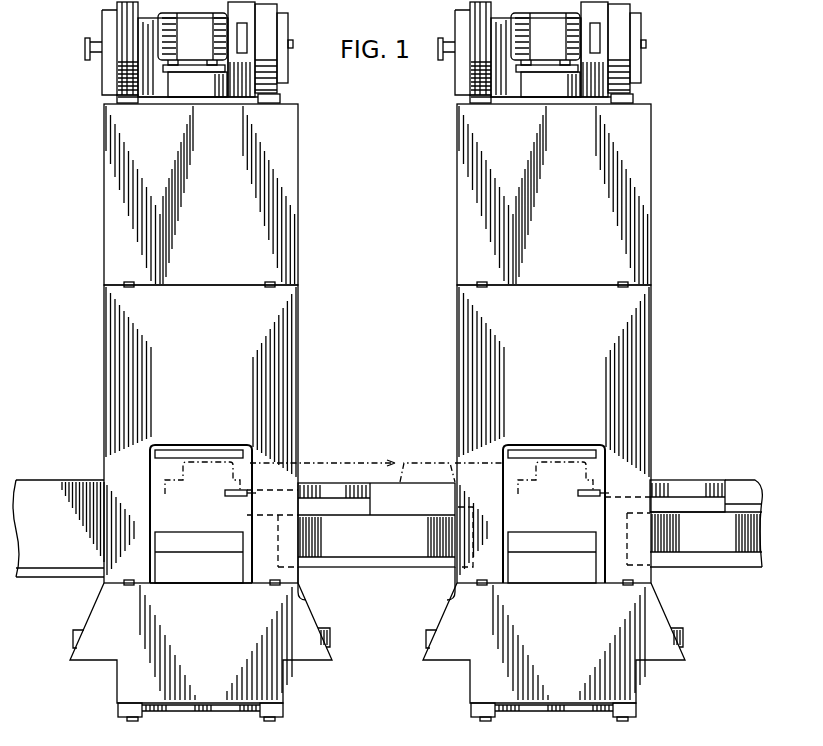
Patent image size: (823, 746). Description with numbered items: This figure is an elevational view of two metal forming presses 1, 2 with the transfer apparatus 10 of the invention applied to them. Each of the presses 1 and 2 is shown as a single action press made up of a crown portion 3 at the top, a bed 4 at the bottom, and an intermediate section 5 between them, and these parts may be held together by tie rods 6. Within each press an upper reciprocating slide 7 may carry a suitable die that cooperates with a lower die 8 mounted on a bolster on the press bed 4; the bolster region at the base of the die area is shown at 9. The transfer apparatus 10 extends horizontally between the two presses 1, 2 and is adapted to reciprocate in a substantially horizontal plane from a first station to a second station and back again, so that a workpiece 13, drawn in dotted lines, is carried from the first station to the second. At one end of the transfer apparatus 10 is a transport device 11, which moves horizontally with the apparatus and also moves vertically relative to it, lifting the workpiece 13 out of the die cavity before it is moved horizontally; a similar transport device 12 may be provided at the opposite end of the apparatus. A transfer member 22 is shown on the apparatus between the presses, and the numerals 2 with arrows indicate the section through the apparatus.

The metal forming press 1 is at (196, 374).
The metal forming press 2 is at (658, 345).
The crown portion 3 is at (290, 218).
The bed 4 is at (303, 613).
The intermediate section 5 is at (104, 340).
The tie rods 6 is at (128, 719).
The upper reciprocating slide 7 is at (180, 445).
The lower die 8 is at (218, 540).
The bed 9 is at (218, 584).
The transfer apparatus 10 is at (376, 581).
The transport device 11 is at (236, 505).
The transport device 12 is at (384, 492).
The workpiece 13 is at (165, 494).
The transfer rail block 22 is at (355, 521).